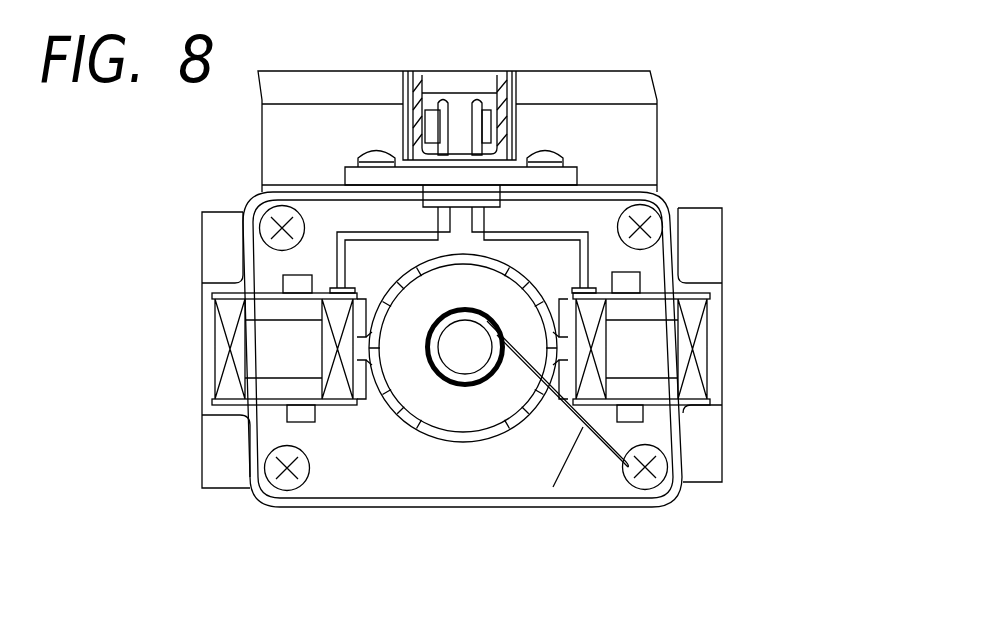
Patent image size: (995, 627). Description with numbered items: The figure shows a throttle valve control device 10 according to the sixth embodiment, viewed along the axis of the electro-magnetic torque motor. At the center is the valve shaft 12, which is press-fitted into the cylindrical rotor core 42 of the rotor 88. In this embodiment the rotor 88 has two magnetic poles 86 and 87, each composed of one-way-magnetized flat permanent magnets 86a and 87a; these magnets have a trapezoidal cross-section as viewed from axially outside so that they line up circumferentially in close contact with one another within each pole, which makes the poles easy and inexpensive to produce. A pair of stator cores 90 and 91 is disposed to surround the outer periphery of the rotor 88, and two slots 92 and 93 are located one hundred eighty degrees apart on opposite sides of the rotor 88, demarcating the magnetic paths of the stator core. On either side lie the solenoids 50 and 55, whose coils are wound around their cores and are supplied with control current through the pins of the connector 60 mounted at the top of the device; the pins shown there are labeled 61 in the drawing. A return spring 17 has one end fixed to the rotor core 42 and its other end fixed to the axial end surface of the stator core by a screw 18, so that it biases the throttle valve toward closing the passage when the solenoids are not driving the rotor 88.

The throttle valve control device 10 is at (658, 62).
The valve shaft 12 is at (462, 362).
The return spring 17 is at (583, 427).
The screw 18 is at (650, 482).
The rotor core 42 is at (447, 418).
The solenoid 50 is at (273, 415).
The solenoid 55 is at (653, 408).
The connector 60 is at (516, 90).
The terminal pins 61 is at (477, 98).
The magnetic pole 86 is at (377, 395).
The flat permanent magnets 86a is at (393, 282).
The magnetic pole 87 is at (590, 270).
The flat permanent magnets 87a is at (550, 292).
The rotor 88 is at (505, 430).
The stator core 90 is at (268, 268).
The stator core 91 is at (315, 487).
The slot 92 is at (345, 350).
The slot 93 is at (635, 345).